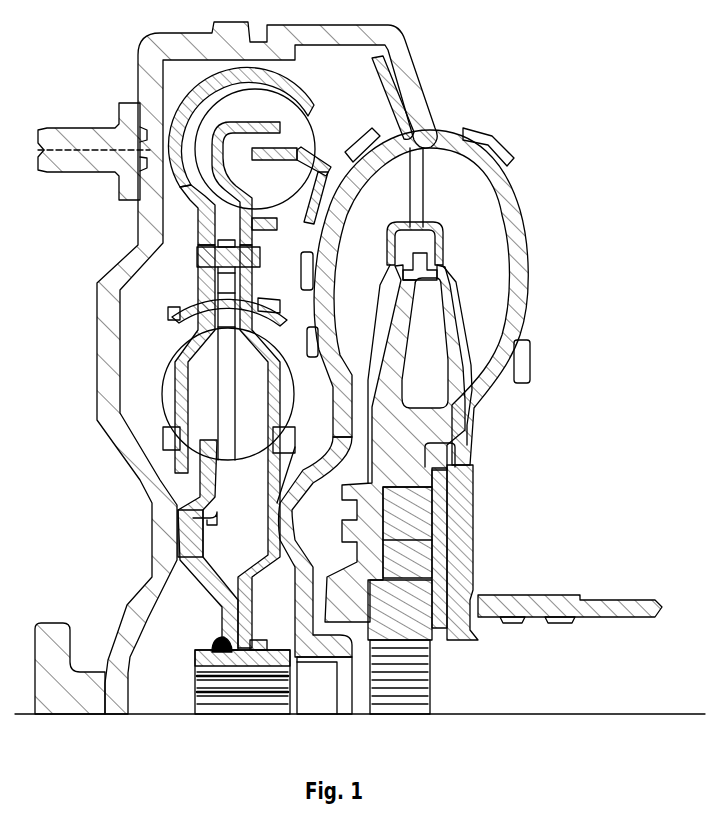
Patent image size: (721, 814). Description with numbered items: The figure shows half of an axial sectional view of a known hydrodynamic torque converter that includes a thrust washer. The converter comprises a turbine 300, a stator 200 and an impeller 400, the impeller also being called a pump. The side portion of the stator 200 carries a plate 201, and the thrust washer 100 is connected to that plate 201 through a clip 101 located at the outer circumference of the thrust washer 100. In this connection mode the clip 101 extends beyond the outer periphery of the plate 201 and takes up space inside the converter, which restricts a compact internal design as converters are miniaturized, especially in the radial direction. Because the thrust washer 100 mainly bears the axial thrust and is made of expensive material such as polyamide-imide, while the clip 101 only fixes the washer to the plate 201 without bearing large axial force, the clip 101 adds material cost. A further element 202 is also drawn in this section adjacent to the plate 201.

The thrust washer 100 is at (452, 502).
The clip 101 is at (437, 465).
The stator 200 is at (423, 367).
The plate 201 is at (437, 527).
The lever arm 202 is at (442, 565).
The turbine 300 is at (385, 163).
The impeller 400 is at (497, 273).